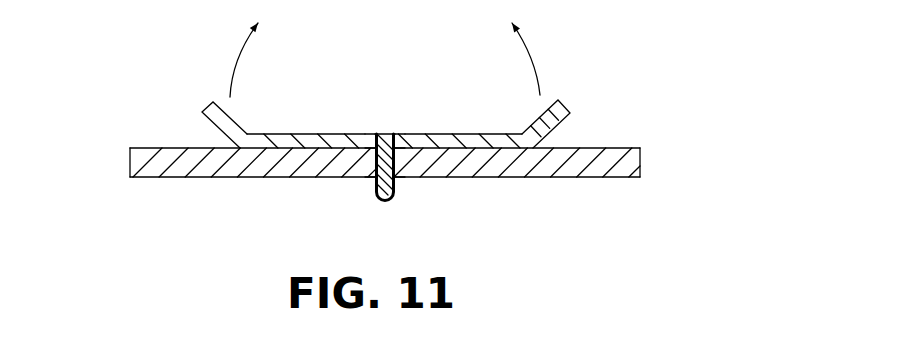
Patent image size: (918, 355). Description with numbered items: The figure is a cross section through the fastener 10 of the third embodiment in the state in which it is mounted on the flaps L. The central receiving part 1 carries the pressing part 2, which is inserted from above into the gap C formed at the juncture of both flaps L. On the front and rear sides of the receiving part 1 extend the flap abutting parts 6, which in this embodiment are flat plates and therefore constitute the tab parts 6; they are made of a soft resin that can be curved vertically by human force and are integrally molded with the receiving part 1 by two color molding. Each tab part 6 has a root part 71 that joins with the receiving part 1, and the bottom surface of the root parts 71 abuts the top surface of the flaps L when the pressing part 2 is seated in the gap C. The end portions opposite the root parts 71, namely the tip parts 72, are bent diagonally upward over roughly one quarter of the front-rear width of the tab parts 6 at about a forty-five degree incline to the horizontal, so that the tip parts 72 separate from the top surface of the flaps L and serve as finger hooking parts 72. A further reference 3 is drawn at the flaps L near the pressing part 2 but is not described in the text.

The fastener 10 is at (186, 110).
The flap abutting part 6 is at (306, 134).
The tip part 72 is at (213, 100).
The root part 71 is at (371, 140).
The receiving part 1 is at (384, 133).
The pressing part 2 is at (395, 198).
The hole in plate 3 is at (375, 168).
The gap C is at (374, 190).
The flap L is at (168, 162).